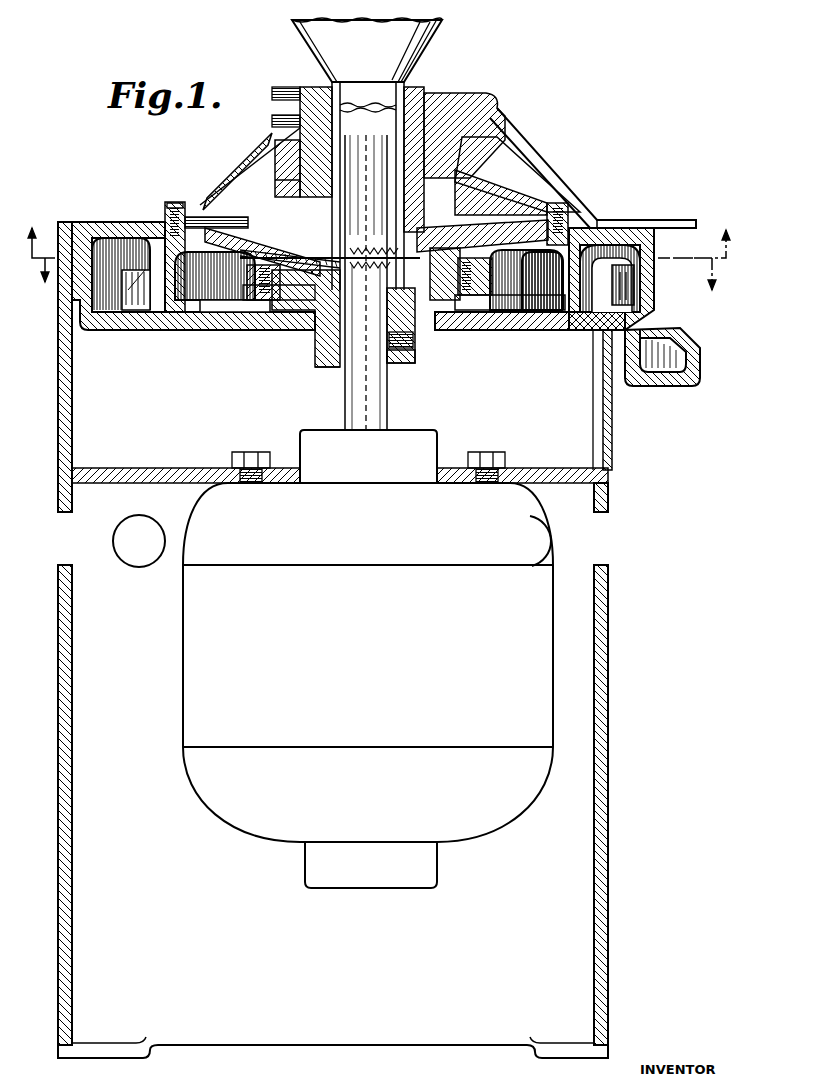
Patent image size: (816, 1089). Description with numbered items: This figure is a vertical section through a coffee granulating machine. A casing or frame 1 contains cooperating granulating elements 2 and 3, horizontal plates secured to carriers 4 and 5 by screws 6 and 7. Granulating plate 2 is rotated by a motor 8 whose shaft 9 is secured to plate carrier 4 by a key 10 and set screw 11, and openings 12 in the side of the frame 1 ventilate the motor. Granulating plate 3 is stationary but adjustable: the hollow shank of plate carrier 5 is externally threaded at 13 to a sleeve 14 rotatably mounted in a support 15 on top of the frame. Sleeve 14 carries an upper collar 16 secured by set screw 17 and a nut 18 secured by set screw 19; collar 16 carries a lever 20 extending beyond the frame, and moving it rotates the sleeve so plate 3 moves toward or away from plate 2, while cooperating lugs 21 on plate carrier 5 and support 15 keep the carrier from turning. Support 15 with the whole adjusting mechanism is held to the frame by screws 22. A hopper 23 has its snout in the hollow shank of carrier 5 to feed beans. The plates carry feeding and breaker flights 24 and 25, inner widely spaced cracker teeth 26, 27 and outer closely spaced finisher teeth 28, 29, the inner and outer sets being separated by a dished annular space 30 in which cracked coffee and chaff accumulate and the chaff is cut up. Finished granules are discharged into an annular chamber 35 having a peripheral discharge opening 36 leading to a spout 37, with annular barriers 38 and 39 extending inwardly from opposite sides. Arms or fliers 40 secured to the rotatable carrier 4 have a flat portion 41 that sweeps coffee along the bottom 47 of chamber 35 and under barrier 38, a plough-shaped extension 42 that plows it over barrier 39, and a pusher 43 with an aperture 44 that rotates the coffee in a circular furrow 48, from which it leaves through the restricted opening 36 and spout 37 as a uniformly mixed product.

The casing or frame 1 is at (604, 736).
The granulating element (rotating plate) 2 is at (318, 356).
The granulating element (stationary plate) 3 is at (538, 281).
The plate carrier (rotatable) 4 is at (320, 365).
The plate carrier (fixed) 5 is at (214, 200).
The screw 6 is at (282, 302).
The screw 7 is at (160, 232).
The motor 8 is at (368, 659).
The shaft 9 is at (350, 410).
The key 10 is at (342, 362).
The set screw 11 is at (404, 364).
The openings 12 is at (120, 545).
The external thread 13 is at (432, 148).
The sleeve 14 is at (310, 96).
The support 15 is at (480, 188).
The upper collar 16 is at (468, 116).
The set screw 17 is at (276, 130).
The nut 18 is at (444, 92).
The set screw 19 is at (280, 95).
The lever 20 is at (538, 152).
The lugs 21 is at (250, 205).
The screws 22 is at (551, 208).
The hopper 23 is at (434, 30).
The feeding and breaker flights 24 is at (412, 340).
The feeding and breaker flights 25 is at (368, 232).
The inner set of teeth 26 is at (446, 312).
The inner set of teeth 27 is at (440, 250).
The outer set of teeth 28 is at (248, 312).
The outer set of teeth 29 is at (512, 300).
The dished annular space 30 is at (275, 306).
The annular chamber 35 is at (538, 300).
The discharge opening 36 is at (650, 300).
The spout 37 is at (666, 372).
The annular barrier 38 is at (565, 296).
The annular barrier 39 is at (620, 280).
The arms or fliers 40 is at (468, 366).
The flat portion 41 is at (478, 312).
The plough-shaped extension 42 is at (140, 246).
The pusher extension 43 is at (634, 288).
The aperture 44 is at (628, 262).
The bottom 47 is at (212, 332).
The circular channel or furrow 48 is at (104, 312).